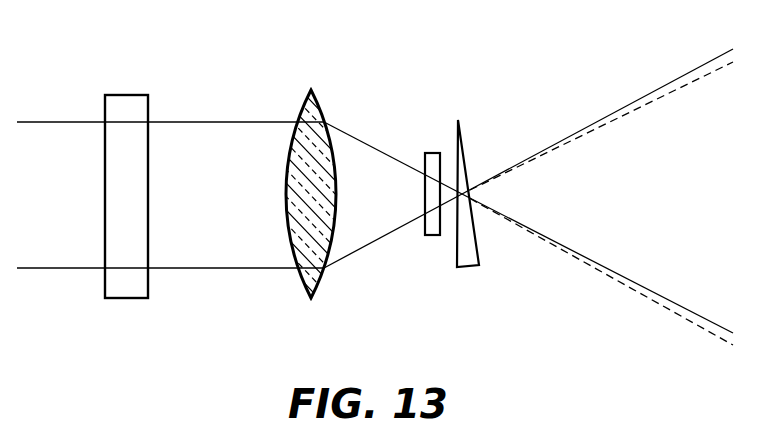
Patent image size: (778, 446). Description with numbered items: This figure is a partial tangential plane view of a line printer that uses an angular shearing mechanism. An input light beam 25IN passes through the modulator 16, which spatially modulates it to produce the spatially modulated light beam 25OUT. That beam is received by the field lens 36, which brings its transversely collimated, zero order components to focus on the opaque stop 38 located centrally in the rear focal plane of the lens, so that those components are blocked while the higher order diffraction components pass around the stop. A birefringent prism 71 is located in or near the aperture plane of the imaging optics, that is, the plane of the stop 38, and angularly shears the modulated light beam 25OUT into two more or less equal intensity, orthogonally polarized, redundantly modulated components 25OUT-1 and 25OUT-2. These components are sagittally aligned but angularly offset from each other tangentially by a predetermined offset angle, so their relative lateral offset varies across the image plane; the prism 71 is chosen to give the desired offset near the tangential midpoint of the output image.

The modulator 16 is at (127, 92).
The field lens 36 is at (318, 97).
The opaque stop 38 is at (428, 237).
The birefringent prism 71 is at (464, 268).
The input light beam 25IN is at (58, 147).
The spatially modulated light beam 25OUT is at (213, 147).
The first redundantly modulated component 25OUT-1 is at (580, 136).
The second redundantly modulated component 25OUT-2 is at (677, 305).